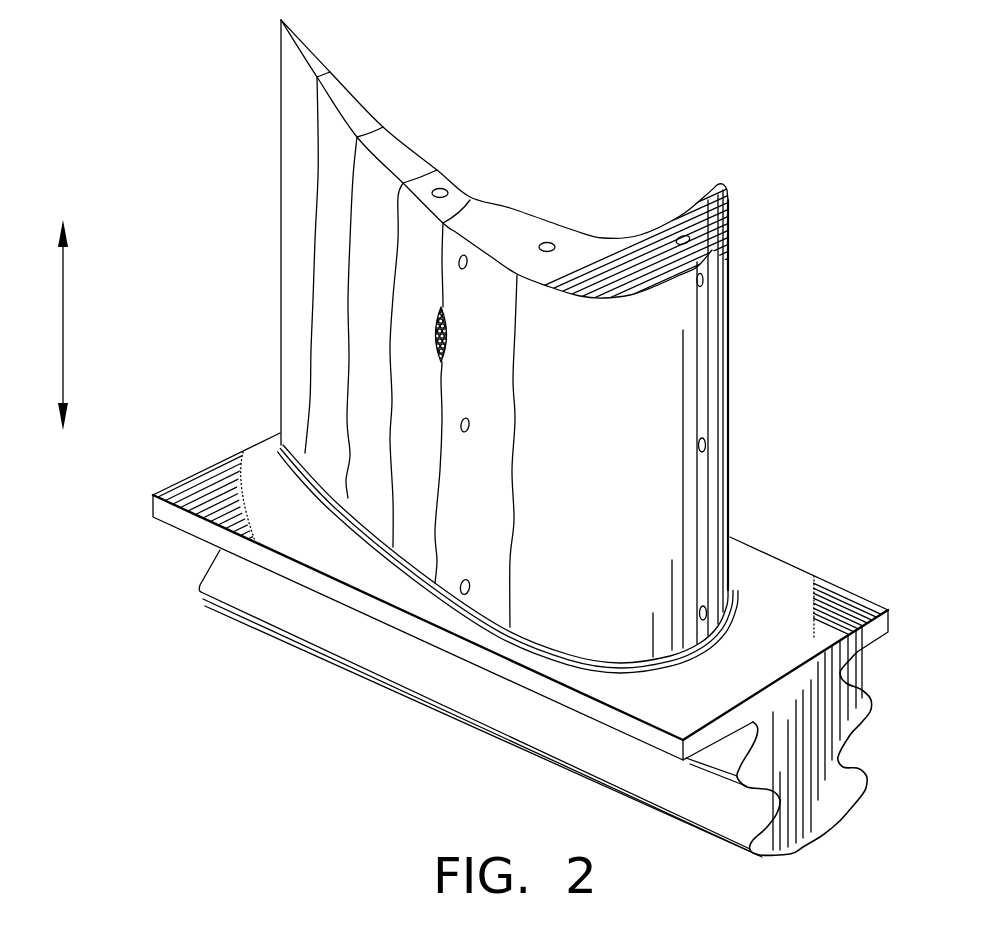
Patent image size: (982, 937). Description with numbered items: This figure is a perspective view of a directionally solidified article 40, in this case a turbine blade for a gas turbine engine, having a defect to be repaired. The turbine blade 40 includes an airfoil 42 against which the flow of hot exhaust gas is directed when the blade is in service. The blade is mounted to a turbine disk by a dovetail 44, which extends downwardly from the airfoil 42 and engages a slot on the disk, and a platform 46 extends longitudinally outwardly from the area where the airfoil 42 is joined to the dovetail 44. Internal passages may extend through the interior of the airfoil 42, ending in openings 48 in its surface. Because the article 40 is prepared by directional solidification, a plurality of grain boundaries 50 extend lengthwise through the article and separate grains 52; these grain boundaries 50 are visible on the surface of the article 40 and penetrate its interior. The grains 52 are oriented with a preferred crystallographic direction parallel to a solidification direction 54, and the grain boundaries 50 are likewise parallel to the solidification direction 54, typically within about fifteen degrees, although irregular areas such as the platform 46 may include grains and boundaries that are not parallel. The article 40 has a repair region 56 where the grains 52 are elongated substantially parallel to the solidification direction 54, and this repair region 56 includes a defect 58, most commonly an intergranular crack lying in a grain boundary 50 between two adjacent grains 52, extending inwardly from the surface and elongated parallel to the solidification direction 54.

The directionally solidified article 40 is at (232, 77).
The airfoil 42 is at (275, 259).
The dovetail 44 is at (220, 566).
The platform 46 is at (208, 486).
The openings 48 is at (681, 232).
The grain boundaries 50 is at (317, 176).
The grains 52 is at (328, 343).
The solidification direction 54 is at (64, 353).
The repair region 56 is at (420, 302).
The defect 58 is at (449, 337).